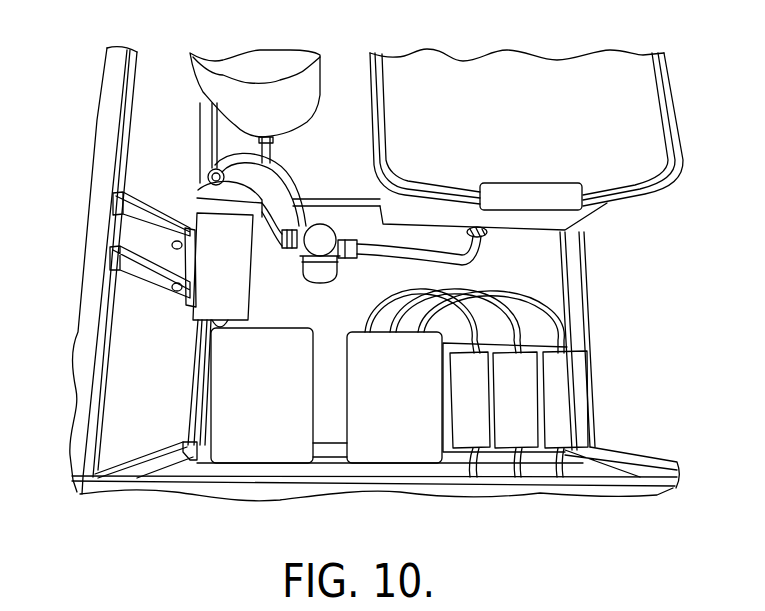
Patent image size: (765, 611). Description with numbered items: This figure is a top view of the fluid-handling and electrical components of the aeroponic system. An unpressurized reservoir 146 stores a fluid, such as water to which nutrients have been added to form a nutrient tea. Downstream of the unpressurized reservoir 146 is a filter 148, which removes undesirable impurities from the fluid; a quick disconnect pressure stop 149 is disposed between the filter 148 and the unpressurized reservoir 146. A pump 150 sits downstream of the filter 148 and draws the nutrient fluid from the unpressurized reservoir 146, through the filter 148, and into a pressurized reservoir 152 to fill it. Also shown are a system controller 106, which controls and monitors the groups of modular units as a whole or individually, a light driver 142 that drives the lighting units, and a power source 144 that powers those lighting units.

The system controller 106 is at (220, 396).
The light driver 142 is at (575, 383).
The power source 144 is at (378, 457).
The unpressurized reservoir 146 is at (655, 97).
The filter 148 is at (327, 238).
The quick disconnect pressure stop 149 is at (463, 250).
The pump 150 is at (200, 222).
The pressurized reservoir 152 is at (222, 65).